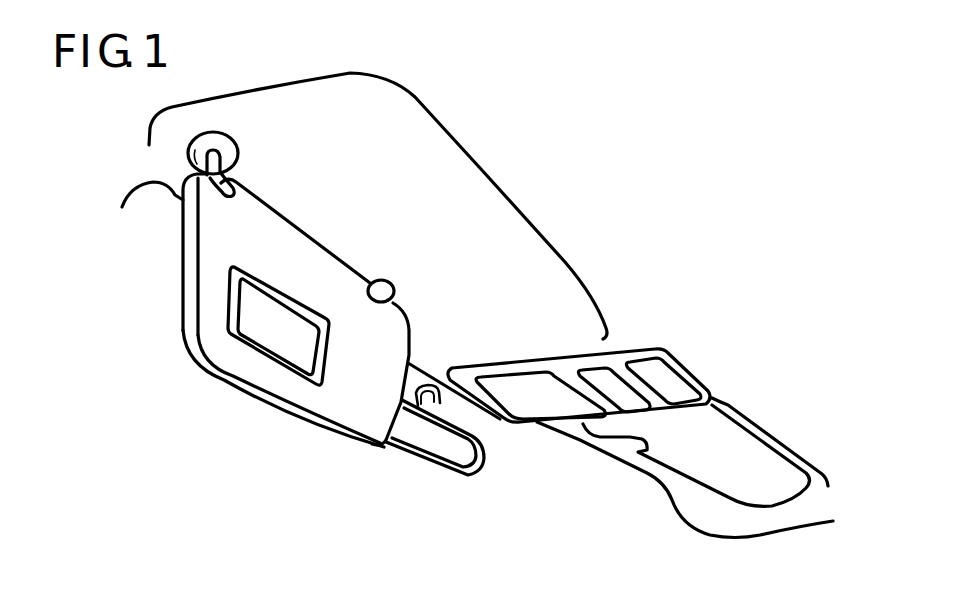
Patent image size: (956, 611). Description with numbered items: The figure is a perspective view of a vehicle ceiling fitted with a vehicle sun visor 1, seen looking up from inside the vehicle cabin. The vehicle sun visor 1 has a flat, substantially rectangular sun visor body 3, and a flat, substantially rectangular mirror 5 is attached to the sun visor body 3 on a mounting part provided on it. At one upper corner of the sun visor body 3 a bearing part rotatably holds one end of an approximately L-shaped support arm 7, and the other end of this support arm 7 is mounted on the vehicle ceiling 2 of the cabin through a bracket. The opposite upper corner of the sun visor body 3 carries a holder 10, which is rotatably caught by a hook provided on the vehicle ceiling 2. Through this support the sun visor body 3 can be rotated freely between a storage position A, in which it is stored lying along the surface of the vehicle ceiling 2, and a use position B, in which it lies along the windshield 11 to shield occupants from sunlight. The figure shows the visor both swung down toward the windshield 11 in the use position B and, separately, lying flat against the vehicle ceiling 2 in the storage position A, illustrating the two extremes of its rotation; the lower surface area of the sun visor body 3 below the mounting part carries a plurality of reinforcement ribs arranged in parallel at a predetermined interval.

The vehicle sun visor 1 is at (475, 389).
The vehicle ceiling 2 is at (633, 257).
The sun visor body 3 is at (182, 303).
The mirror 5 is at (240, 340).
The support arm 7 is at (190, 172).
The holder 10 is at (381, 289).
The windshield 11 is at (165, 424).
The storage position A is at (652, 470).
The use position B is at (280, 422).